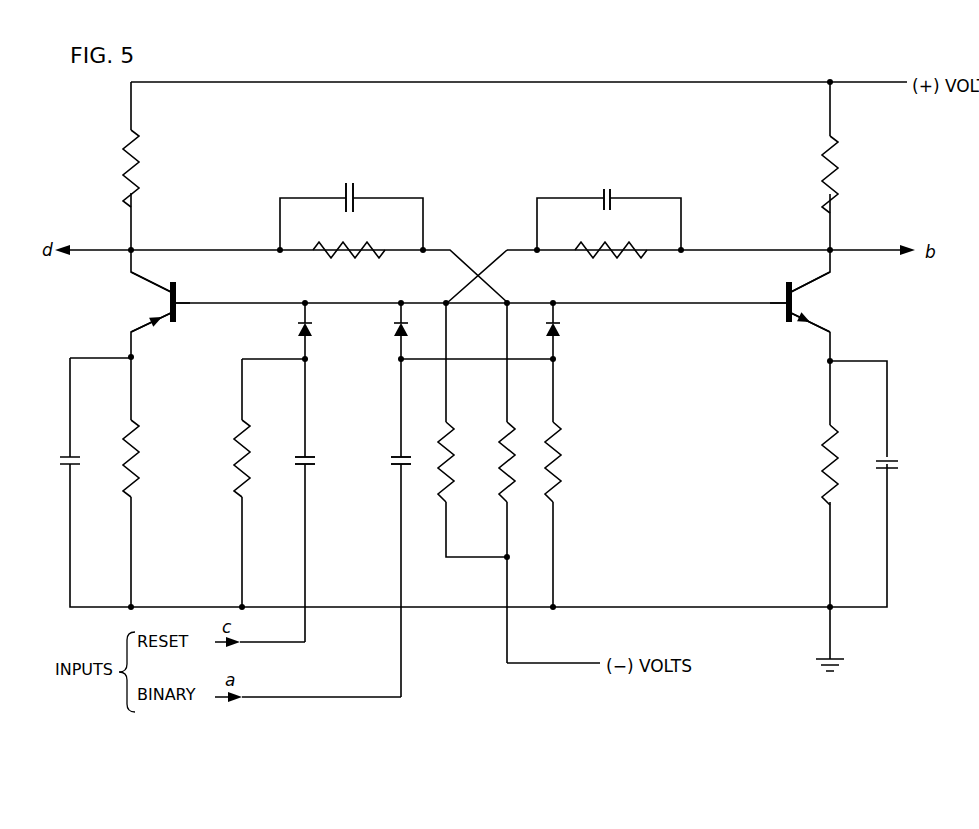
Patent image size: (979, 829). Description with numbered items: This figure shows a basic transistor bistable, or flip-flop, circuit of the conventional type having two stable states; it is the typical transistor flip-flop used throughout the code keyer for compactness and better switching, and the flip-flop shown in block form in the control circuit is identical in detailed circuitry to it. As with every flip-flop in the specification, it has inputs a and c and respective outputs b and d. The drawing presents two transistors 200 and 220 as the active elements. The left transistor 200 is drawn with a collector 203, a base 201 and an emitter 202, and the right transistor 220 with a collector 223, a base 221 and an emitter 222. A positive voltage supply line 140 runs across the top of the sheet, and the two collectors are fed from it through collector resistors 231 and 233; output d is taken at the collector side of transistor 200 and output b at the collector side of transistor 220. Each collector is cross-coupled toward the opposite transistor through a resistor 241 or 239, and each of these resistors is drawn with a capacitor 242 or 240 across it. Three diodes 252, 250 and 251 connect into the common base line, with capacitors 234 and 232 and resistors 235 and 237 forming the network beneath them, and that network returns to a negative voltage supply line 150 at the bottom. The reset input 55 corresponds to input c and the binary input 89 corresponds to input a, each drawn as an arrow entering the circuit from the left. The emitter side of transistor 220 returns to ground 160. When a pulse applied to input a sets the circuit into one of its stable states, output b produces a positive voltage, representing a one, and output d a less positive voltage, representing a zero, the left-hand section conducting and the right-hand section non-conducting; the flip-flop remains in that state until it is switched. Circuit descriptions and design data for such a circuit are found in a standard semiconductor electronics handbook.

The positive voltage supply line 140 is at (878, 82).
The collector load resistor 231 is at (127, 170).
The collector load resistor 233 is at (835, 172).
The speed-up capacitor 242 is at (356, 196).
The cross-coupling resistor 241 is at (330, 255).
The speed-up capacitor 240 is at (613, 199).
The cross-coupling resistor 239 is at (590, 255).
The collector of transistor 200 203 is at (148, 285).
The transistor 200 is at (145, 302).
The base of transistor 200 201 is at (176, 317).
The emitter of transistor 200 202 is at (145, 335).
The steering diode 252 is at (297, 326).
The steering diode 250 is at (396, 327).
The steering diode 251 is at (559, 327).
The coupling capacitor 234 is at (308, 460).
The coupling capacitor 232 is at (404, 460).
The resistor 235 is at (449, 460).
The resistor 237 is at (509, 460).
The collector of transistor 220 223 is at (815, 283).
The transistor 220 is at (821, 302).
The base of transistor 220 221 is at (783, 318).
The emitter of transistor 220 222 is at (812, 338).
The reset input line 55 is at (245, 641).
The binary input line 89 is at (258, 696).
The negative voltage supply line 150 is at (555, 662).
The ground connection 160 is at (838, 652).